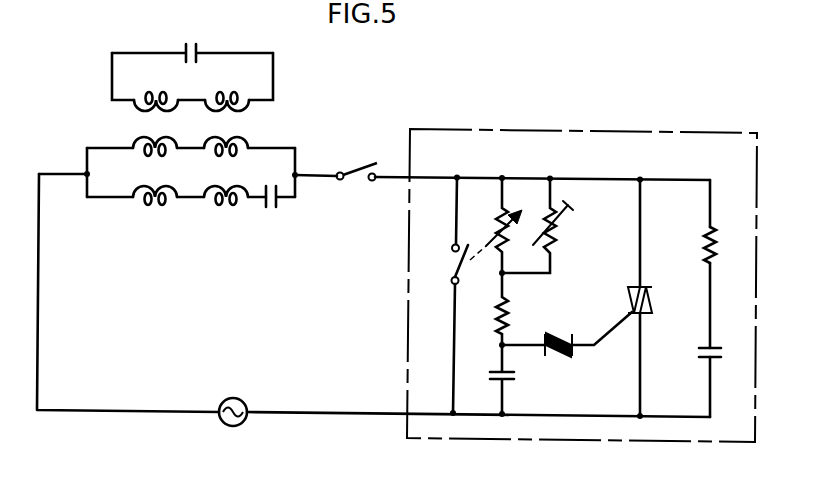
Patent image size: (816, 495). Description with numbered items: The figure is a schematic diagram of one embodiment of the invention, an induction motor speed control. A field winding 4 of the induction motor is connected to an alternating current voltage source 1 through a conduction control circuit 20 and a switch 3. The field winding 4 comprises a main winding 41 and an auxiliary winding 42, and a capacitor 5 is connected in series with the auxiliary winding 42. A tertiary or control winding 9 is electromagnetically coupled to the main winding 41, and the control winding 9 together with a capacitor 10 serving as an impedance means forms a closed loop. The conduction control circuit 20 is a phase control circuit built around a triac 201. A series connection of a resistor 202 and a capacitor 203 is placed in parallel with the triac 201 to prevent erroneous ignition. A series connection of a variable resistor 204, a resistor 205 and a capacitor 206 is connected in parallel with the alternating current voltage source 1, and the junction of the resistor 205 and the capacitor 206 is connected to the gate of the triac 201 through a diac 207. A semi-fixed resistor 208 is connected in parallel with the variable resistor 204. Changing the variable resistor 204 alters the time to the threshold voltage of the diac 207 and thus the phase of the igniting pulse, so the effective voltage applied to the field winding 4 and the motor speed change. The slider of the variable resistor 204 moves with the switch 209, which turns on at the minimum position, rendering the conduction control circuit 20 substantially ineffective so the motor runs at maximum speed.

The alternating current voltage source 1 is at (240, 398).
The switch 3 is at (362, 186).
The field winding 4 is at (200, 177).
The main winding 41 is at (218, 156).
The auxiliary winding 42 is at (218, 201).
The capacitor 5 is at (265, 206).
The control winding 9 is at (170, 93).
The capacitor 10 is at (198, 50).
The conduction control circuit 20 is at (432, 296).
The triac 201 is at (632, 288).
The resistor 202 is at (706, 244).
The capacitor 203 is at (699, 358).
The variable resistor 204 is at (500, 245).
The resistor 205 is at (508, 308).
The capacitor 206 is at (505, 388).
The diac 207 is at (572, 355).
The semi-fixed resistor 208 is at (557, 245).
The switch 209 is at (450, 272).